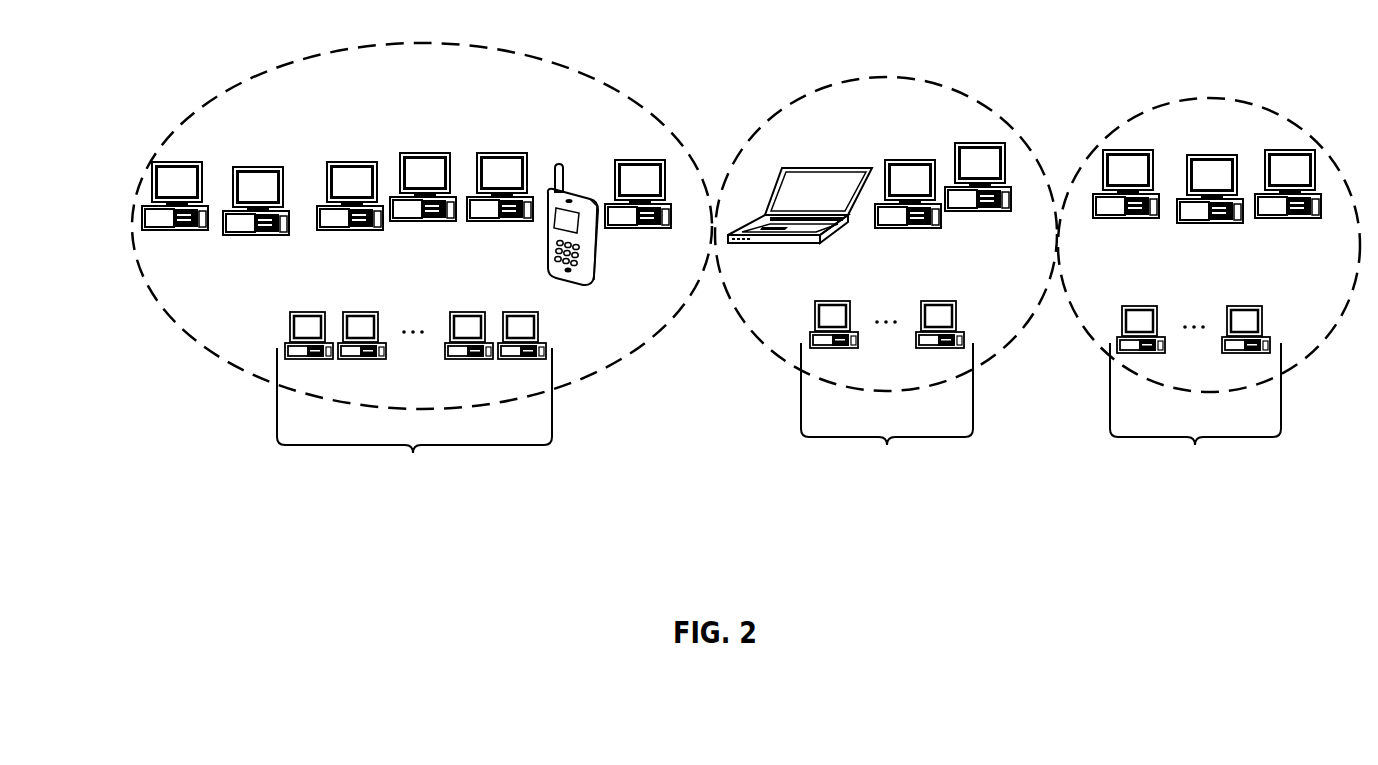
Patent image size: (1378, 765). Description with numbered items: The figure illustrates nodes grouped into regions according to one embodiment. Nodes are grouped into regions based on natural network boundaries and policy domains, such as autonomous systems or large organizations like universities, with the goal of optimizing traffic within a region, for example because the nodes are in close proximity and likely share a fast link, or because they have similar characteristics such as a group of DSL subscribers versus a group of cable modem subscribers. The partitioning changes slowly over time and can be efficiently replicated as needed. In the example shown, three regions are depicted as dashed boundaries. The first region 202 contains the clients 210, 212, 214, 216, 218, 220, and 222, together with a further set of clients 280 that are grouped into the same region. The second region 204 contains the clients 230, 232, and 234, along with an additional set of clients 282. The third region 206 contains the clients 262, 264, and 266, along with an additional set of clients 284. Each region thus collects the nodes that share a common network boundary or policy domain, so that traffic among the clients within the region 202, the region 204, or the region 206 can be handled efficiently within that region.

The region 202 is at (456, 47).
The region 204 is at (903, 79).
The region 206 is at (1246, 105).
The client 210 is at (160, 232).
The client 212 is at (260, 238).
The client 214 is at (340, 232).
The client 216 is at (428, 222).
The client 218 is at (478, 222).
The client 220 is at (640, 228).
The client 222 is at (562, 279).
The client 230 is at (752, 245).
The client 232 is at (890, 229).
The client 234 is at (983, 212).
The client 262 is at (1113, 220).
The client 264 is at (1198, 224).
The client 266 is at (1292, 220).
The clients 280 is at (414, 400).
The clients 282 is at (887, 393).
The clients 284 is at (1195, 393).